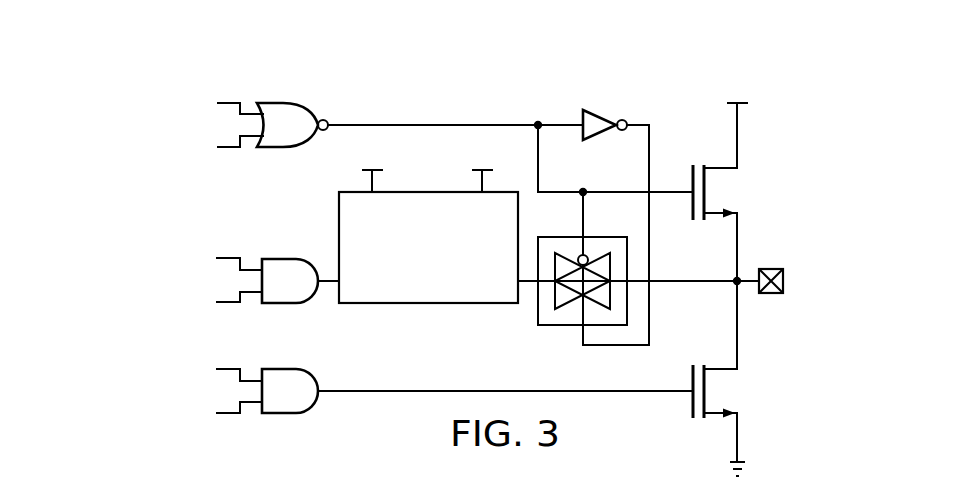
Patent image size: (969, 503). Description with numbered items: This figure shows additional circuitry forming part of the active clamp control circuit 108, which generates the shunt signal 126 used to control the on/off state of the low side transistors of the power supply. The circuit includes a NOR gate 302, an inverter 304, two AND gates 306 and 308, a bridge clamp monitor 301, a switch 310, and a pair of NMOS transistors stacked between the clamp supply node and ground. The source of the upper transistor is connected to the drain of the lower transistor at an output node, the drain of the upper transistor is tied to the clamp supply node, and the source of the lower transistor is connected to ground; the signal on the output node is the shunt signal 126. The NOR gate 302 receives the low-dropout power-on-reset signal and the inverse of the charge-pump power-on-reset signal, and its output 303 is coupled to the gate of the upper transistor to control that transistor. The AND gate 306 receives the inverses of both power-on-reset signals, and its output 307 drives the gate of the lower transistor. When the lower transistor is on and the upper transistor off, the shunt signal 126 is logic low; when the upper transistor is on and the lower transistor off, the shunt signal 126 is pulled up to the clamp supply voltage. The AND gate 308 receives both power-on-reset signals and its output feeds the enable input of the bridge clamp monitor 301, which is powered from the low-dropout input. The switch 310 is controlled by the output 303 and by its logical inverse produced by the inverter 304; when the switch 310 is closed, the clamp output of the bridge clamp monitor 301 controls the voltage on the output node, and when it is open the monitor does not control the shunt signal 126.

The active clamp control circuit 108 is at (414, 88).
The NOR gate 302 is at (277, 102).
The output from NOR gate 303 is at (535, 122).
The inverter 304 is at (600, 110).
The AND gate 308 is at (277, 259).
The bridge clamp monitor 301 is at (405, 303).
The output from AND gate 307 is at (483, 390).
The AND gate 306 is at (278, 415).
The switch 310 is at (562, 326).
The SHUNT signal 126 is at (770, 295).